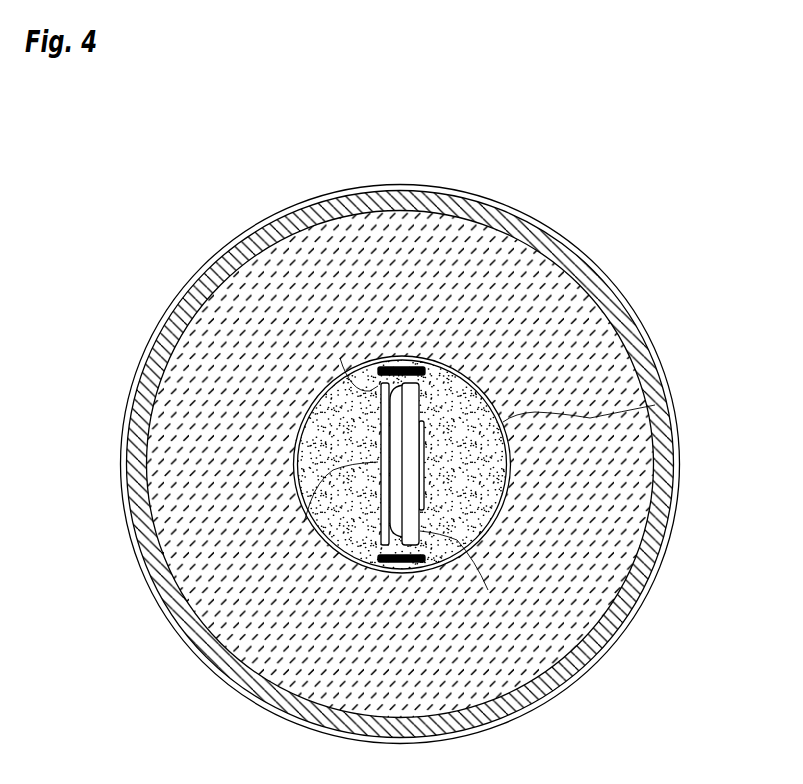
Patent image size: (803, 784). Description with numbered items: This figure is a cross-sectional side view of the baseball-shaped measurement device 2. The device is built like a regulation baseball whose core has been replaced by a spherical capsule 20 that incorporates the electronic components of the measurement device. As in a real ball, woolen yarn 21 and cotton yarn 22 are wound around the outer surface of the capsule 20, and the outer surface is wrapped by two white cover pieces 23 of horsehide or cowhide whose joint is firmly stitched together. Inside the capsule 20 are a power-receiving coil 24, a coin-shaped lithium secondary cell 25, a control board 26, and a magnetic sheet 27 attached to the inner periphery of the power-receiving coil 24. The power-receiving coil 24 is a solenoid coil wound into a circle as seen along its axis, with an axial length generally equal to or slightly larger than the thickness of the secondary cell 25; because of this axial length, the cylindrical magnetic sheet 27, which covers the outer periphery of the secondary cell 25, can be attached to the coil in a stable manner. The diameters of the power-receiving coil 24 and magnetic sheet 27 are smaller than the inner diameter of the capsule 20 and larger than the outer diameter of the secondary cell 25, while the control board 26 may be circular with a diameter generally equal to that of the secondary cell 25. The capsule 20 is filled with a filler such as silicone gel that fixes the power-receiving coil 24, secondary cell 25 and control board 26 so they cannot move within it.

The measurement device 2 is at (193, 267).
The capsule 20 is at (667, 380).
The woolen yarn 21 is at (583, 313).
The cotton yarn 22 is at (565, 242).
The cover pieces 23 is at (505, 218).
The power-receiving coil 24 is at (403, 366).
The secondary cell 25 is at (488, 590).
The control board 26 is at (306, 520).
The magnetic sheet 27 is at (347, 378).